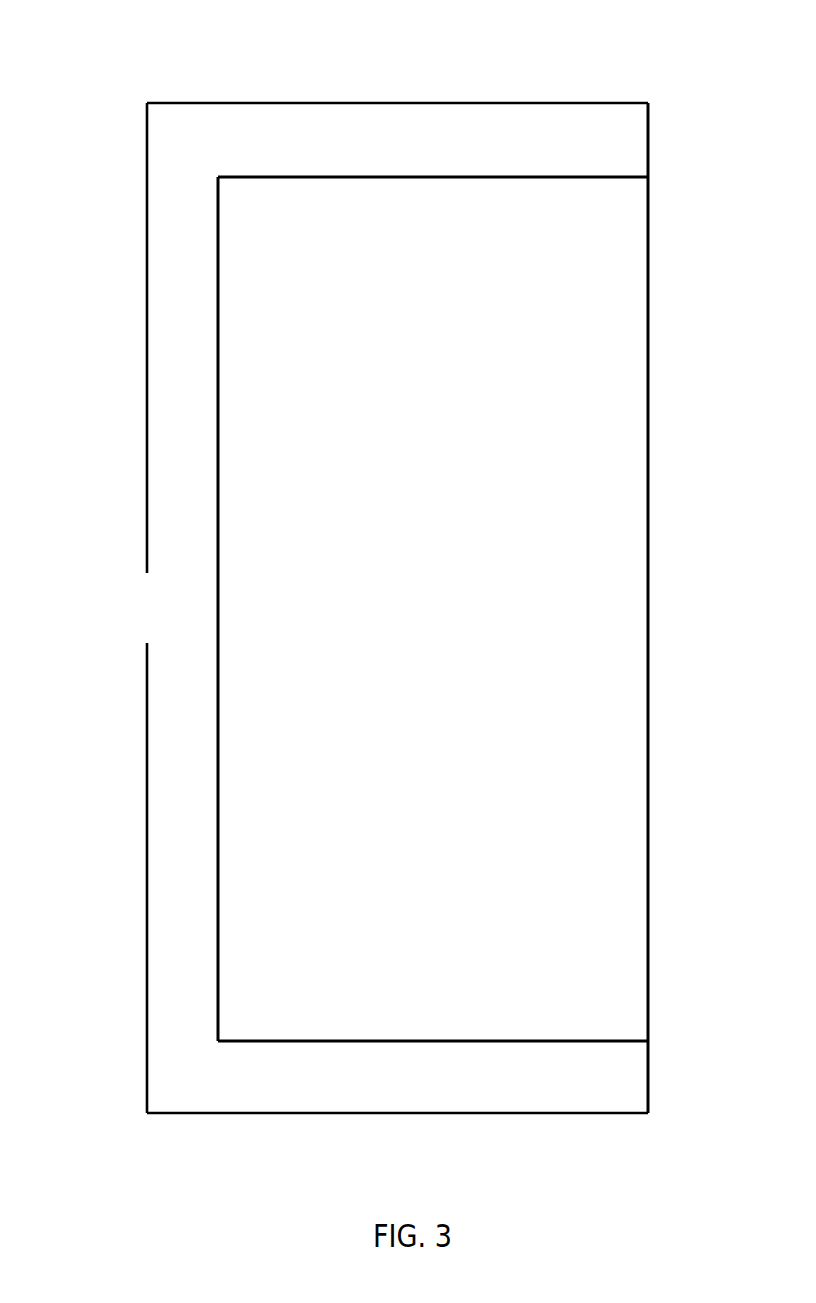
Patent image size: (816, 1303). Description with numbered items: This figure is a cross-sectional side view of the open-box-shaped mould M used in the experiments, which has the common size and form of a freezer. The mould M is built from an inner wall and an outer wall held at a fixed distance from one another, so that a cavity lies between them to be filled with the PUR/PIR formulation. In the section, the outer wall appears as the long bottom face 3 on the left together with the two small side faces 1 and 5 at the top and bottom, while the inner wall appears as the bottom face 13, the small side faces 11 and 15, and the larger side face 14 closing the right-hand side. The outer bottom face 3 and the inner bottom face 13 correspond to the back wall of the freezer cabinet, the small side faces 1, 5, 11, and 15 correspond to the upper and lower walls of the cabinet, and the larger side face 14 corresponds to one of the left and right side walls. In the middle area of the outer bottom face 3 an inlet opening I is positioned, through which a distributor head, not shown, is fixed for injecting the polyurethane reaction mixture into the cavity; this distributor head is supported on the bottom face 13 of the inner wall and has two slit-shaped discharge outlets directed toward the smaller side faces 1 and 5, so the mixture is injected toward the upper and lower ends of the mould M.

The mould M is at (162, 60).
The inlet opening I is at (138, 609).
The side face 1 is at (425, 103).
The bottom face 3 is at (147, 347).
The side face 5 is at (418, 1113).
The side face 11 is at (432, 177).
The bottom face 13 is at (218, 357).
The side face 14 is at (620, 518).
The side face 15 is at (410, 1041).